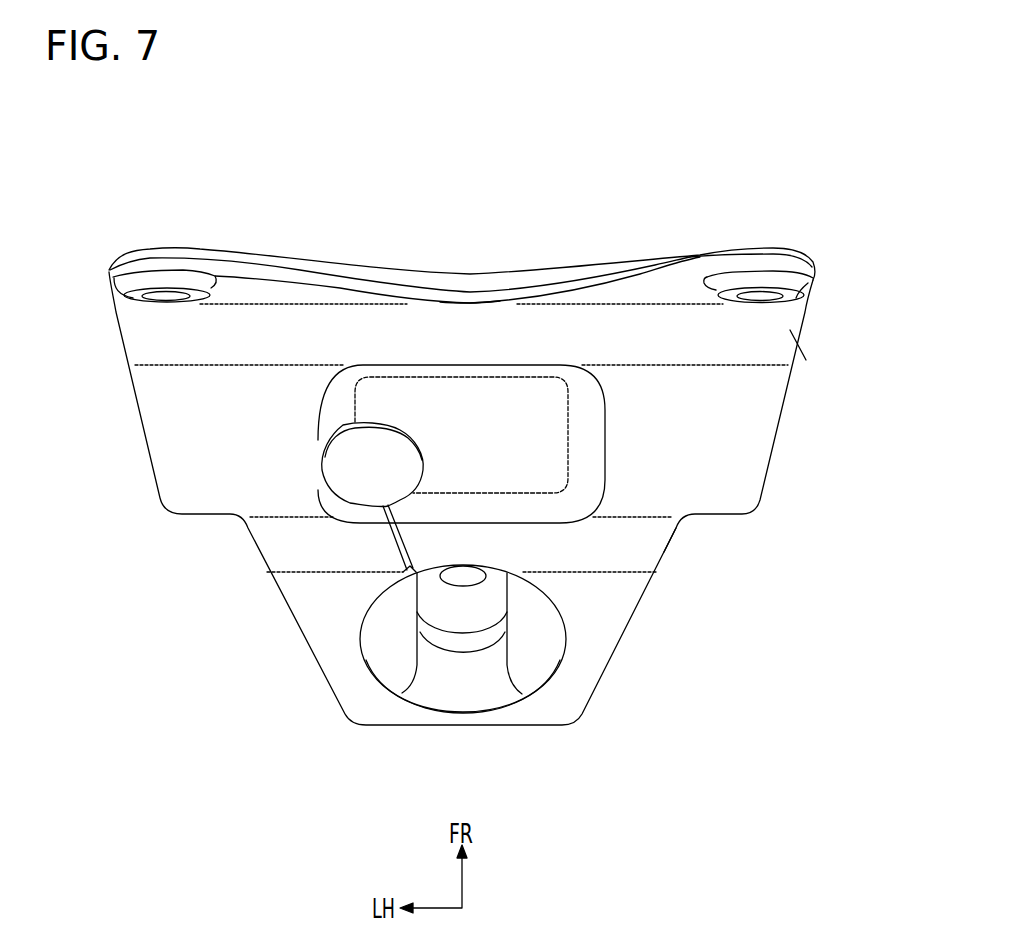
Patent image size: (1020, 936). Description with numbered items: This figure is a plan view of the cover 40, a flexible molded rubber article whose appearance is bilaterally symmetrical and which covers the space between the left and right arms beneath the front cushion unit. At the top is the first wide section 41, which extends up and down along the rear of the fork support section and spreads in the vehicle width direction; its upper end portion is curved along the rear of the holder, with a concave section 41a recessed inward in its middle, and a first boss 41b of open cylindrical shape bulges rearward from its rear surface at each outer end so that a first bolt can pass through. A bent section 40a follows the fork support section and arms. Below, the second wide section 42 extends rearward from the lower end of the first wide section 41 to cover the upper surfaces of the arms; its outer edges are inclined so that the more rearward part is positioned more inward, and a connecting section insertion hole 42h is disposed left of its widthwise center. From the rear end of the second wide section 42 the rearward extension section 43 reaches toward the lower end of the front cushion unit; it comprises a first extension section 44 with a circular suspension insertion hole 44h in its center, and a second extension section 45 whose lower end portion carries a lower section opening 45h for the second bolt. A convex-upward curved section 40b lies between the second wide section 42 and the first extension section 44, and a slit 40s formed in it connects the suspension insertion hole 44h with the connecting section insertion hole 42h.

The cover 40 is at (793, 143).
The first wide section 41 is at (686, 280).
The concave section 41a is at (470, 300).
The first boss 41b is at (135, 297).
The bent section 40a is at (783, 343).
The curved section 40b is at (653, 545).
The second wide section 42 is at (748, 435).
The connecting section insertion hole 42h is at (362, 466).
The slit 40s is at (395, 540).
The rearward extension section 43 is at (248, 713).
The first extension section 44 is at (335, 672).
The second extension section 45 is at (430, 661).
The suspension insertion hole 44h is at (527, 647).
The lower section opening 45h is at (467, 576).